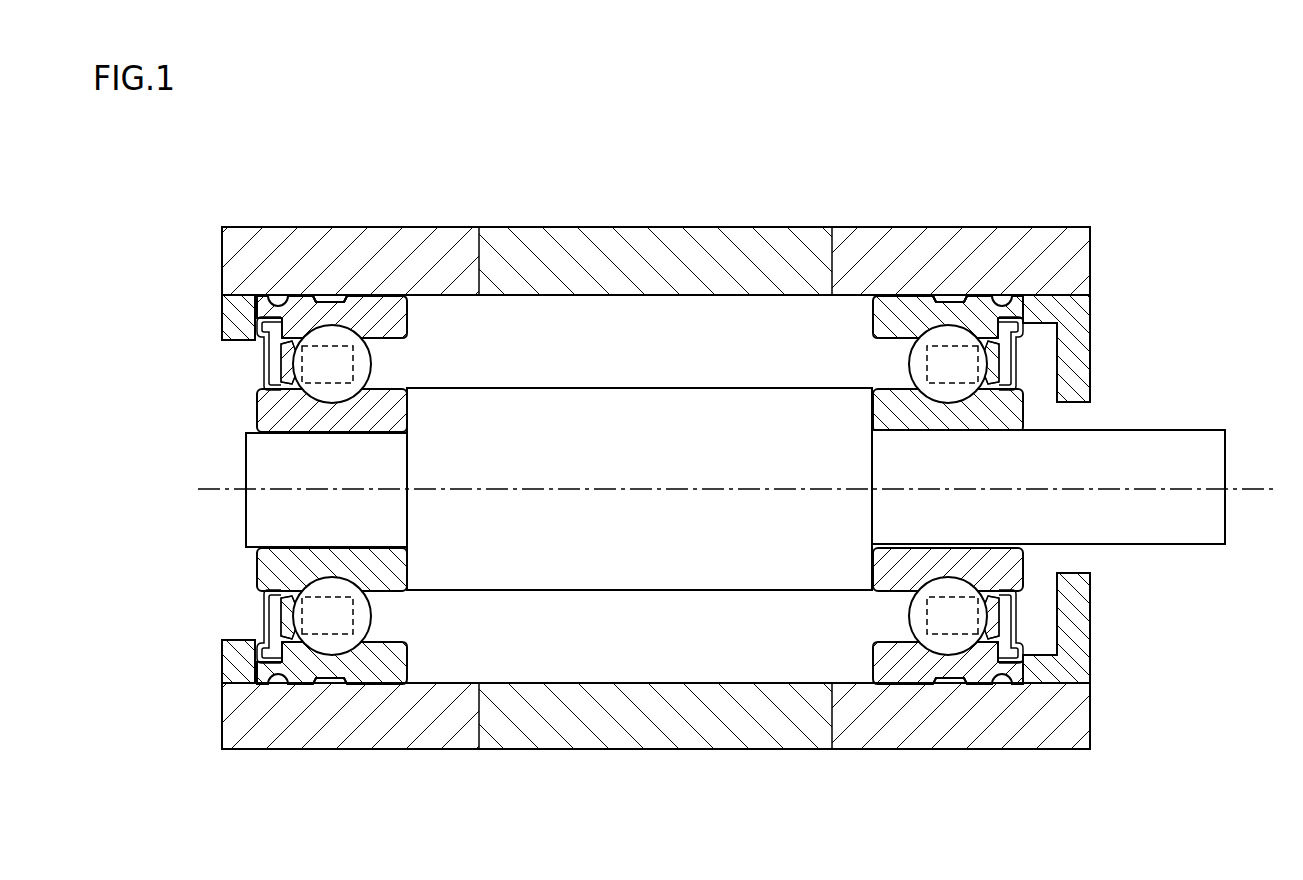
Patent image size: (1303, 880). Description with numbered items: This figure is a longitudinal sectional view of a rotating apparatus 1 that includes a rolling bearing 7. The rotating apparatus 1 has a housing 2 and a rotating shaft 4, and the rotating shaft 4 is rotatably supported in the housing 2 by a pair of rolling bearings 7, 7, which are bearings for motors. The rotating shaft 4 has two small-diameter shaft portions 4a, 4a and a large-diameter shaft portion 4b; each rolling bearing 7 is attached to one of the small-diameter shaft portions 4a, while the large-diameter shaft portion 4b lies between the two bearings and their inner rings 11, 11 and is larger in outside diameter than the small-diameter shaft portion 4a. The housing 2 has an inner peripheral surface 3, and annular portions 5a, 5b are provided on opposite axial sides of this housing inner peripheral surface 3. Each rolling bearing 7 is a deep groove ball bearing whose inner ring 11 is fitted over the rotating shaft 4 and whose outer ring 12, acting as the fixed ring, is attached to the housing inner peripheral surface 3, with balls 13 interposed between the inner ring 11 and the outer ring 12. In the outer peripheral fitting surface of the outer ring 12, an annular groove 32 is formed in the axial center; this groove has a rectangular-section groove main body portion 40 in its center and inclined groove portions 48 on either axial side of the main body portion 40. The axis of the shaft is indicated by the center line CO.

The rotating apparatus 1 is at (658, 486).
The housing 2 is at (400, 258).
The inner peripheral surface 3 is at (270, 297).
The rotating shaft 4 is at (711, 506).
The small-diameter shaft portion 4a is at (262, 468).
The large-diameter shaft portion 4b is at (652, 560).
The annular portion 5a is at (232, 323).
The annular portion 5b is at (1085, 328).
The rolling bearing 7 is at (281, 692).
The inner ring 11 is at (265, 572).
The outer ring 12 is at (270, 668).
The ball 13 is at (342, 612).
The annular groove 32 is at (330, 684).
The groove main body portion 40 is at (333, 296).
The inclined groove portion 48 is at (311, 296).
The central axis CO is at (1250, 486).